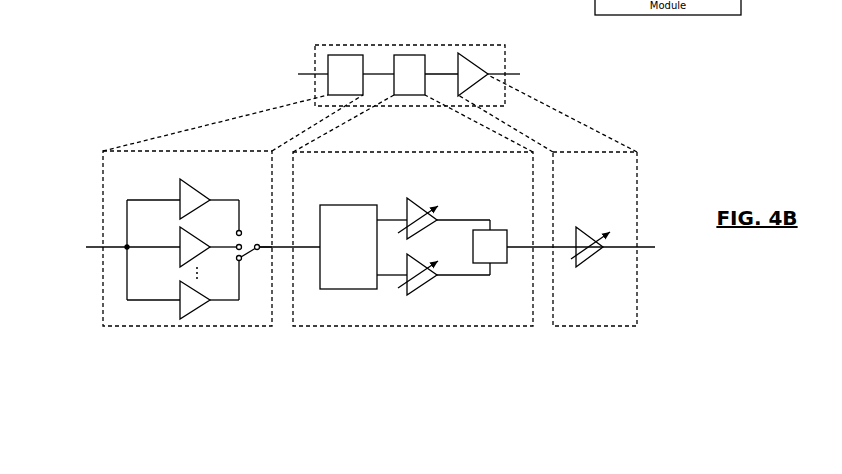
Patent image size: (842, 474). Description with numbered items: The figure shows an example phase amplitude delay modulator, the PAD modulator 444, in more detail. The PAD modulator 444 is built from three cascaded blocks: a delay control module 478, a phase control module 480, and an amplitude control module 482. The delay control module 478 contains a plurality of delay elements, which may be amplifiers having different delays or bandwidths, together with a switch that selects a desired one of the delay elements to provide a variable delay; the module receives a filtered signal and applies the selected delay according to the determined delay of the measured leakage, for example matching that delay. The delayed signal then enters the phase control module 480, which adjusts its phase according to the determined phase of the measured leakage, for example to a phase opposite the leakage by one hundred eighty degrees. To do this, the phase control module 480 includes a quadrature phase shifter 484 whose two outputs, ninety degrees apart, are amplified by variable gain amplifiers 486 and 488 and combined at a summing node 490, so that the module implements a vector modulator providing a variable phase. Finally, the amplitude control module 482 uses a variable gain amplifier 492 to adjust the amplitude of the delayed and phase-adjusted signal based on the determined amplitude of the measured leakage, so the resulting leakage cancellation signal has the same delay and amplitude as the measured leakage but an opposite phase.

The PAD modulator 444 is at (410, 45).
The delay control module 478 is at (103, 317).
The phase control module 480 is at (413, 239).
The amplitude control module 482 is at (619, 239).
The quadrature phase shifter 484 is at (348, 205).
The variable gain amplifier 486 is at (416, 200).
The variable gain amplifier 488 is at (425, 289).
The summing node 490 is at (500, 263).
The variable gain amplifier 492 is at (595, 268).